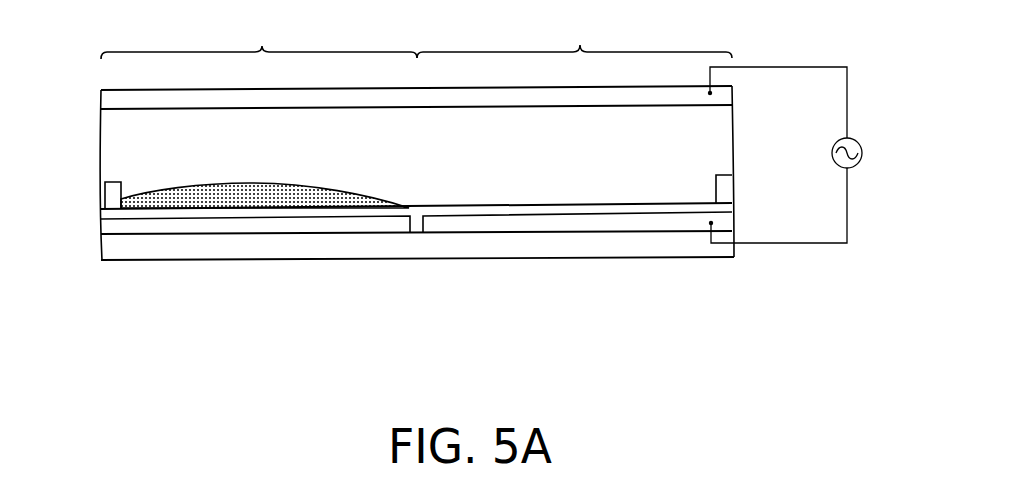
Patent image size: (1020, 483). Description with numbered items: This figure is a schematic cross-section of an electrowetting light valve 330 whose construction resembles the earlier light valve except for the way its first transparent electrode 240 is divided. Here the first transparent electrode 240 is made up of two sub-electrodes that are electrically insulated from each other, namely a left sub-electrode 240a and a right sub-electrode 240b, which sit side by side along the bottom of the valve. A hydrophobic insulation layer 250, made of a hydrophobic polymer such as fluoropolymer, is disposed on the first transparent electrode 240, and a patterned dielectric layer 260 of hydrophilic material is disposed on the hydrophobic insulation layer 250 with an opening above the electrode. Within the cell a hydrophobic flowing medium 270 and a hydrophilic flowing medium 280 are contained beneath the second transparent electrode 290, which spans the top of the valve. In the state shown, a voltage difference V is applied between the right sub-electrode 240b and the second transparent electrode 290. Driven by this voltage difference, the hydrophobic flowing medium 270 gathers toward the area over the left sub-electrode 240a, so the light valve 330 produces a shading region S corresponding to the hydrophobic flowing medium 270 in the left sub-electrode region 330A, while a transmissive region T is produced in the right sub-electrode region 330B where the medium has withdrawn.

The electrowetting light valve 330 is at (878, 315).
The left sub-electrode region 330A is at (259, 34).
The right sub-electrode region 330B is at (574, 33).
The second transparent electrode 290 is at (723, 97).
The hydrophilic flowing medium 280 is at (718, 147).
The patterned dielectric layer 260 is at (723, 190).
The hydrophobic insulation layer 250 is at (723, 207).
The first transparent electrode 240 is at (416, 292).
The left sub-electrode 240a is at (377, 228).
The right sub-electrode 240b is at (470, 228).
The hydrophobic flowing medium 270 is at (213, 193).
The shading region S is at (278, 240).
The transmissive region T is at (568, 236).
The voltage difference V is at (797, 155).